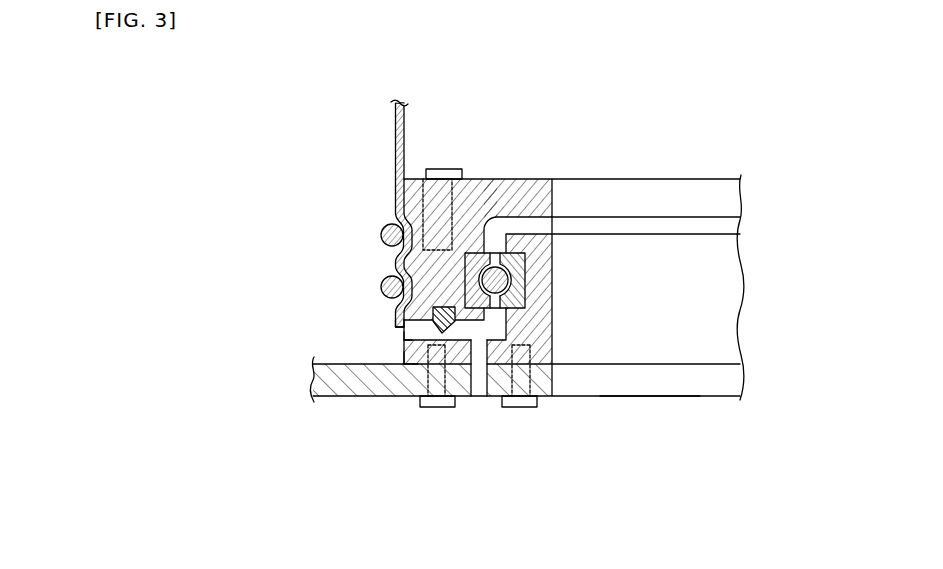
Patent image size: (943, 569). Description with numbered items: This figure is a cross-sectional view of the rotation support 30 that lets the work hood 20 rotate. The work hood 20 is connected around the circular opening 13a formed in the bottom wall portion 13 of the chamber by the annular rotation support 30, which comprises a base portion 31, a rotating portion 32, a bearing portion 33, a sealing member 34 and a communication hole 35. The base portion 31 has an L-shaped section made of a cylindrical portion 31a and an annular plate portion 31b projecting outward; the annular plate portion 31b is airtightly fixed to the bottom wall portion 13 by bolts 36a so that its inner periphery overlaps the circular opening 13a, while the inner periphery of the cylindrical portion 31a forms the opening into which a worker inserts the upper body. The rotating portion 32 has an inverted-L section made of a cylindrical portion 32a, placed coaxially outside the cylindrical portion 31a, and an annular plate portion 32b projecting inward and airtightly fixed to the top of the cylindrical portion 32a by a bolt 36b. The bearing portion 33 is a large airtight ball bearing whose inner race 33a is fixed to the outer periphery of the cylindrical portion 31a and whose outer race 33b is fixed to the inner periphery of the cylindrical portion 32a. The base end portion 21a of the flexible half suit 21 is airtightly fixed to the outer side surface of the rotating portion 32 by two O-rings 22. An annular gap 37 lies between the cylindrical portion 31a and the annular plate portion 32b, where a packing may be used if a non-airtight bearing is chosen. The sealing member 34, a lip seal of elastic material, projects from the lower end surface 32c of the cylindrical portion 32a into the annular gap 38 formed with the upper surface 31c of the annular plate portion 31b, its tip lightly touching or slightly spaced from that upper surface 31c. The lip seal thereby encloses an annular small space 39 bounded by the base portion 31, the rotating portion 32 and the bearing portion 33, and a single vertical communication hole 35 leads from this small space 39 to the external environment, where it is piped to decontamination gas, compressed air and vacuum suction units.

The bottom wall portion 13 is at (324, 364).
The circular opening 13a is at (640, 427).
The work hood 20 is at (343, 213).
The half suit 21 is at (395, 157).
The base end portion 21a is at (400, 317).
The O-rings 22 is at (382, 282).
The rotation support 30 is at (527, 95).
The base portion 31 is at (484, 345).
The cylindrical portion 31a is at (535, 285).
The annular plate portion 31b is at (423, 355).
The upper surface 31c is at (413, 357).
The rotating portion 32 is at (505, 230).
The cylindrical portion 32a is at (432, 254).
The annular plate portion 32b is at (509, 190).
The lower end surface 32c is at (470, 326).
The bearing portion 33 is at (548, 276).
The inner race 33a is at (527, 257).
The outer race 33b is at (526, 305).
The sealing member 34 is at (416, 333).
The communication hole 35 is at (478, 405).
The bolts 36a is at (434, 409).
The bolt 36b is at (449, 173).
The annular gap 37 is at (557, 228).
The annular gap 38 is at (393, 341).
The small space 39 is at (500, 323).